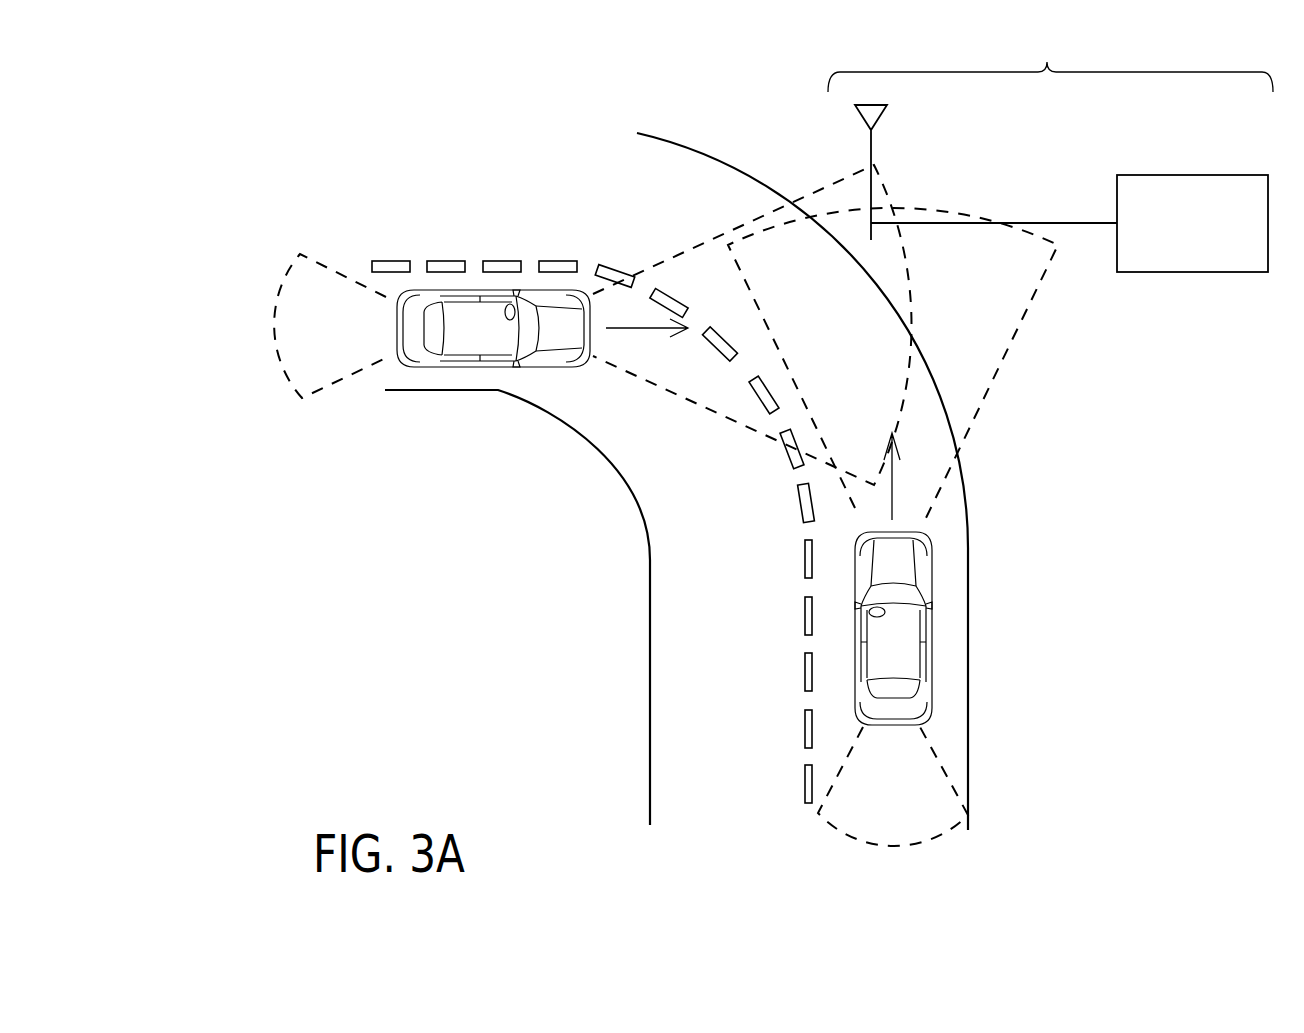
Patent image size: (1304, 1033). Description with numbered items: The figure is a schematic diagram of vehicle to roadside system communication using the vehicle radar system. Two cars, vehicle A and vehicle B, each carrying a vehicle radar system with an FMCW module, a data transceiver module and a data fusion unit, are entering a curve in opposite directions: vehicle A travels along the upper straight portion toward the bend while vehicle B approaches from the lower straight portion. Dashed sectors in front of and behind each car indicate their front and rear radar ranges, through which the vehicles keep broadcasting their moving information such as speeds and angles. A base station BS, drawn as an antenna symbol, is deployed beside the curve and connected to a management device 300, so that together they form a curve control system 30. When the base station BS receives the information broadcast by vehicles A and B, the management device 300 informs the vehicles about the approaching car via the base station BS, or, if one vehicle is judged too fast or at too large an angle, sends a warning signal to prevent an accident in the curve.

The curve control system 30 is at (1047, 62).
The management device 300 is at (1186, 174).
The base station BS is at (876, 118).
The vehicle A is at (464, 365).
The vehicle B is at (927, 633).